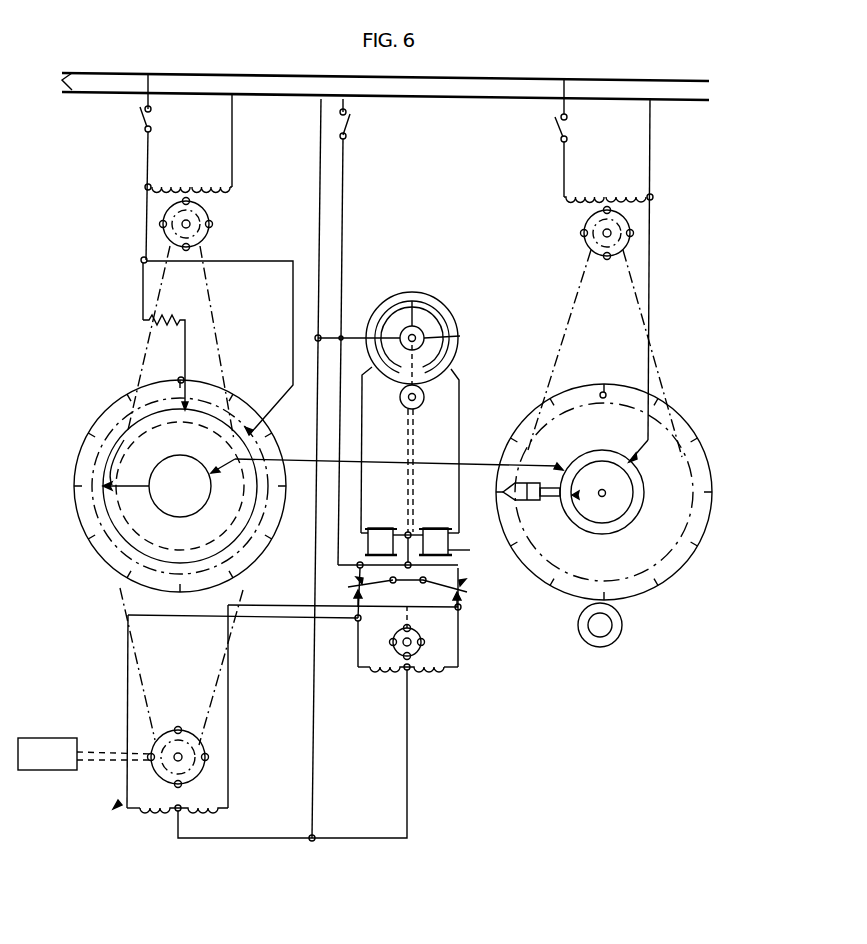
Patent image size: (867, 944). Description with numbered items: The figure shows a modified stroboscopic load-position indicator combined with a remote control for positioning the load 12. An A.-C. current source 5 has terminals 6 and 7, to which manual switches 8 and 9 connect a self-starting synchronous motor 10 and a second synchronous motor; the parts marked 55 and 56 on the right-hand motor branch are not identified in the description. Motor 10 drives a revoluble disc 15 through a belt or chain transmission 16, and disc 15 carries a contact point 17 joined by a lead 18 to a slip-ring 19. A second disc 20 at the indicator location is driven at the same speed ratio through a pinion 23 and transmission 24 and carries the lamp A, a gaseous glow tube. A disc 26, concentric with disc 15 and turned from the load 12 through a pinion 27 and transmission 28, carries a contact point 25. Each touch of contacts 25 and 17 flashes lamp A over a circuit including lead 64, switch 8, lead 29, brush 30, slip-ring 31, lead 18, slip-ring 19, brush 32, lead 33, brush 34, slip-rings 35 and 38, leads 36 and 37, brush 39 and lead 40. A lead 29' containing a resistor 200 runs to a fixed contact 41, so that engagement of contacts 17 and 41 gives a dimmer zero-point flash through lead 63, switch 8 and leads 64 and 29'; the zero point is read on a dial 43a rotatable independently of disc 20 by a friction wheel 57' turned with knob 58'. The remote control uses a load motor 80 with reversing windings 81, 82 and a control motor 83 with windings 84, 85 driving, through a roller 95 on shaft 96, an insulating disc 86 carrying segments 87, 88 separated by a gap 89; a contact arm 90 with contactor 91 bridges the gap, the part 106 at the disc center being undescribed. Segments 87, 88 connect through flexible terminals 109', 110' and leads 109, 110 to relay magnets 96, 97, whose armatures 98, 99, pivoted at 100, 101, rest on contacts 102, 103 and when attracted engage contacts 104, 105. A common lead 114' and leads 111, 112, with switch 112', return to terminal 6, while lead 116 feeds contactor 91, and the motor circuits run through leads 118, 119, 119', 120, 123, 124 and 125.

The A.-C. current source 5 is at (54, 85).
The terminal 6 is at (478, 80).
The terminal 7 is at (485, 100).
The manual switch 8 is at (141, 120).
The manual switch 9 is at (552, 128).
The self-starting synchronous motor 10 is at (209, 235).
The load 12 is at (44, 738).
The revoluble disc 15 is at (143, 540).
The belt or chain transmission 16 is at (213, 304).
The contact point 17 is at (177, 486).
The lead 18 is at (130, 499).
The slip-ring 19 is at (161, 505).
The disc 20 is at (695, 480).
The pinion 23 is at (613, 261).
The belt or chain transmission 24 is at (653, 299).
The contact point 25 is at (106, 486).
The revoluble disc 26 is at (213, 408).
The pinion 27 is at (160, 765).
The belt or chain transmission 28 is at (218, 672).
The lead 29 is at (220, 348).
The lead 29' is at (126, 288).
The brush 30 is at (249, 430).
The peripheral slip-ring 31 is at (110, 447).
The brush 32 is at (224, 483).
The lead 33 is at (474, 462).
The brush 34 is at (563, 467).
The slip-ring 35 is at (591, 459).
The lead 36 is at (574, 495).
The lead 37 is at (551, 497).
The slip-ring 38 is at (632, 520).
The brush 39 is at (636, 467).
The lead 40 is at (651, 257).
The fixed contact point 41 is at (182, 405).
The dial 43a is at (694, 436).
The field winding 55 is at (566, 173).
The conductor 56 is at (568, 112).
The friction drive wheel 57' is at (629, 625).
The knob 58' is at (626, 639).
The lead 63 is at (150, 76).
The lead 64 is at (147, 174).
The load motor 80 is at (116, 802).
The reversing winding 81 is at (148, 812).
The reversing winding 82 is at (205, 812).
The control motor 83 is at (419, 646).
The reversing winding 84 is at (379, 671).
The reversing winding 85 is at (436, 671).
The disc of insulation material 86 is at (422, 312).
The arcuate conducting segment 87 is at (400, 296).
The arcuate conducting segment 88 is at (448, 321).
The neutral point or gap 89 is at (413, 303).
The contact arm 90 is at (418, 323).
The contactor 91 is at (416, 314).
The spur gear or friction roller 95 is at (424, 398).
The relay magnet 96 is at (415, 430).
The relay magnet 97 is at (472, 551).
The armature 98 is at (372, 574).
The armature 99 is at (431, 577).
The pivot 100 is at (385, 597).
The pivot 101 is at (437, 597).
The contact point 102 is at (348, 588).
The contact point 103 is at (467, 592).
The contact 104 is at (360, 580).
The contact 105 is at (462, 582).
The shaft 106 is at (460, 336).
The lead 109 is at (383, 458).
The flexible terminal portion 109' is at (383, 389).
The lead 110 is at (472, 458).
The flexible terminal portion 110' is at (475, 365).
The lead 111 is at (420, 530).
The lead 112 is at (363, 238).
The switch 112' is at (369, 121).
The common lead 114' is at (388, 524).
The lead 116 is at (354, 336).
The lead 118 is at (315, 806).
The lead 119 is at (245, 842).
The branch lead 119' is at (359, 771).
The lead 120 is at (129, 716).
The lead 123 is at (358, 642).
The lead 124 is at (229, 708).
The lead 125 is at (459, 640).
The resistor 200 is at (172, 349).
The electric lamp A is at (522, 504).